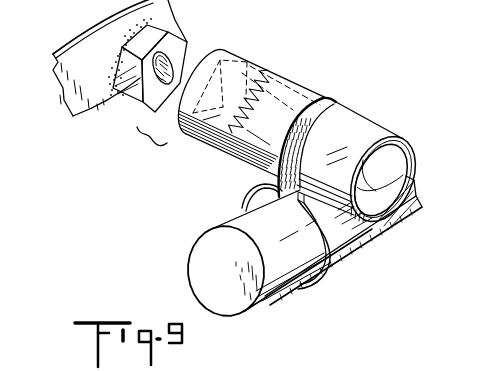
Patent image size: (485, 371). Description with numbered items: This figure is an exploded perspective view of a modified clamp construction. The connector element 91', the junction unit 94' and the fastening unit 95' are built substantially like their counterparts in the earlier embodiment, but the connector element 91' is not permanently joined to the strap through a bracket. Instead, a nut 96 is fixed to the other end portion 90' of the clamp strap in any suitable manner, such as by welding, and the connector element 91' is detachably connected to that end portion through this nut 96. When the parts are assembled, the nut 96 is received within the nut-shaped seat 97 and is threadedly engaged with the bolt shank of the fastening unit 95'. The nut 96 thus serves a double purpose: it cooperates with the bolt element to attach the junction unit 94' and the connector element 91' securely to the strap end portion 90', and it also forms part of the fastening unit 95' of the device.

The other end portion of the clamp strap 90' is at (120, 58).
The nut 96 is at (137, 103).
The connector element 91' is at (251, 112).
The nut-shaped seat 97 is at (252, 68).
The fastening unit 95' is at (363, 160).
The junction unit 94' is at (305, 246).